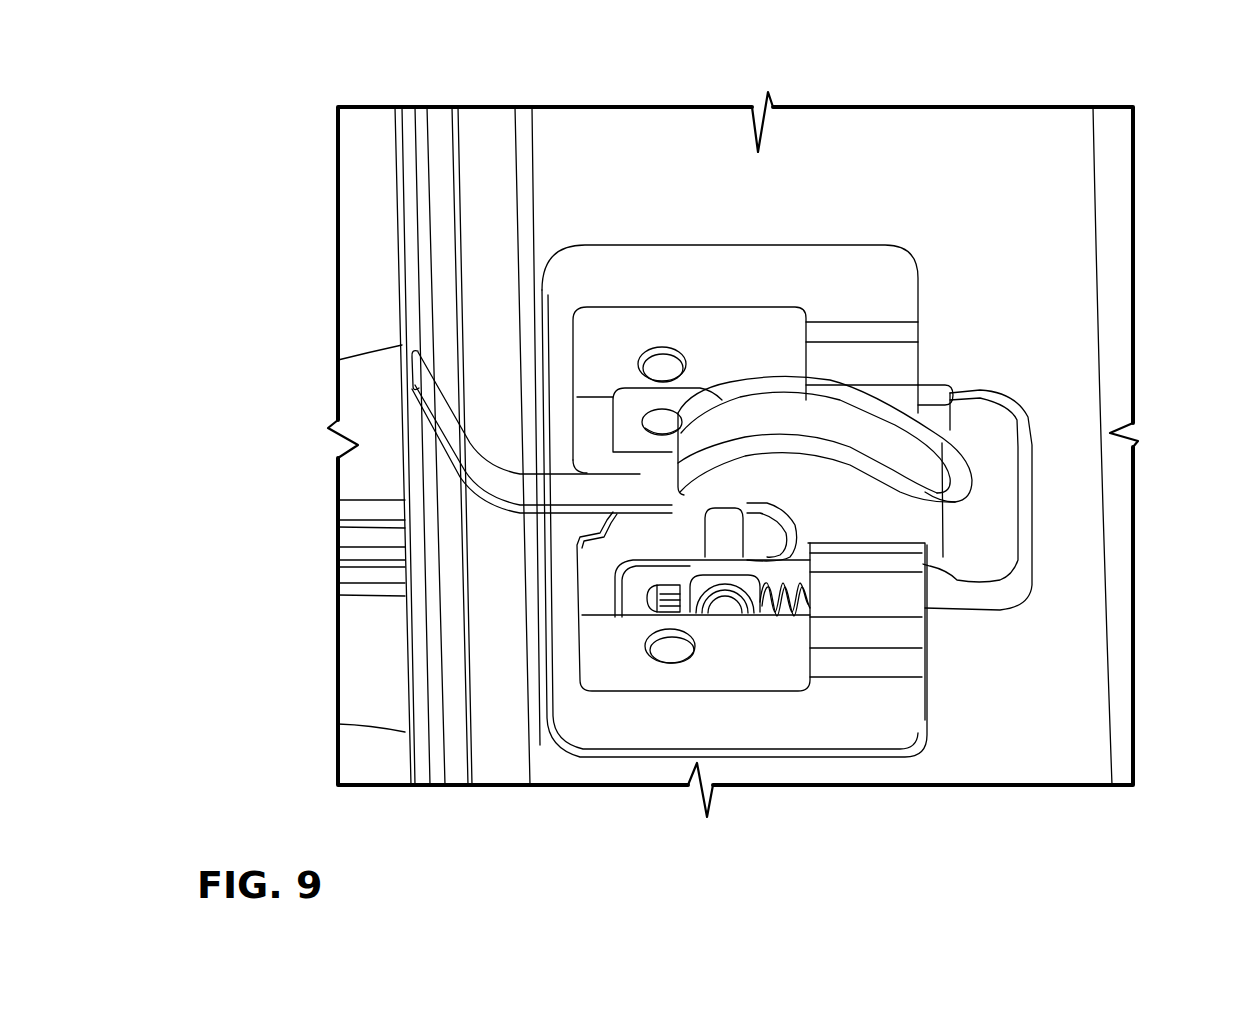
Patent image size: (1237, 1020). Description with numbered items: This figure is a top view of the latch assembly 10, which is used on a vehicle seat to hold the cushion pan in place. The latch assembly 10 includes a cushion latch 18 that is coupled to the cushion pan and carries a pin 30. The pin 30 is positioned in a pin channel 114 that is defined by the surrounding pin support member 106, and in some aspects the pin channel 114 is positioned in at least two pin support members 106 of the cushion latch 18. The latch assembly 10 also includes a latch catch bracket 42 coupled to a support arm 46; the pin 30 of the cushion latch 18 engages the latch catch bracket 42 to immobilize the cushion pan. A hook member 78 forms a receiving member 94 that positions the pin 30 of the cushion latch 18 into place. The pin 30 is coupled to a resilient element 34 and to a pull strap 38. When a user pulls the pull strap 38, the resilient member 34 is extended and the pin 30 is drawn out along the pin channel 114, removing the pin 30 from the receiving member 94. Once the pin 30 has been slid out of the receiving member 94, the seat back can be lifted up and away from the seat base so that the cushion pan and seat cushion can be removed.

The latch assembly 10 is at (598, 206).
The cushion latch 18 is at (835, 290).
The pin 30 is at (727, 545).
The resilient element 34 is at (813, 598).
The pull strap 38 is at (498, 480).
The latch catch bracket 42 is at (987, 545).
The support arm 46 is at (377, 632).
The hook member 78 is at (811, 509).
The receiving member 94 is at (770, 545).
The pin support member 106 is at (632, 590).
The pin channel 114 is at (668, 598).